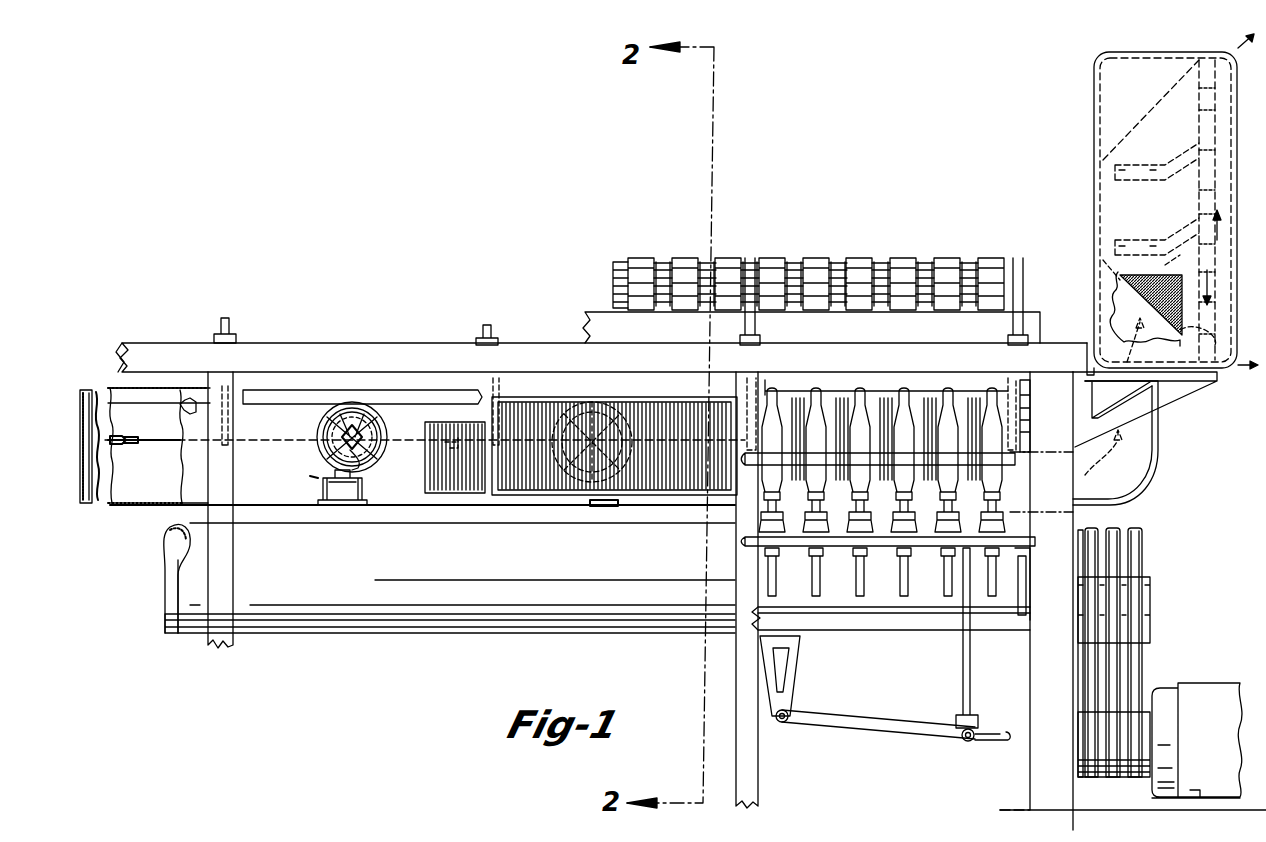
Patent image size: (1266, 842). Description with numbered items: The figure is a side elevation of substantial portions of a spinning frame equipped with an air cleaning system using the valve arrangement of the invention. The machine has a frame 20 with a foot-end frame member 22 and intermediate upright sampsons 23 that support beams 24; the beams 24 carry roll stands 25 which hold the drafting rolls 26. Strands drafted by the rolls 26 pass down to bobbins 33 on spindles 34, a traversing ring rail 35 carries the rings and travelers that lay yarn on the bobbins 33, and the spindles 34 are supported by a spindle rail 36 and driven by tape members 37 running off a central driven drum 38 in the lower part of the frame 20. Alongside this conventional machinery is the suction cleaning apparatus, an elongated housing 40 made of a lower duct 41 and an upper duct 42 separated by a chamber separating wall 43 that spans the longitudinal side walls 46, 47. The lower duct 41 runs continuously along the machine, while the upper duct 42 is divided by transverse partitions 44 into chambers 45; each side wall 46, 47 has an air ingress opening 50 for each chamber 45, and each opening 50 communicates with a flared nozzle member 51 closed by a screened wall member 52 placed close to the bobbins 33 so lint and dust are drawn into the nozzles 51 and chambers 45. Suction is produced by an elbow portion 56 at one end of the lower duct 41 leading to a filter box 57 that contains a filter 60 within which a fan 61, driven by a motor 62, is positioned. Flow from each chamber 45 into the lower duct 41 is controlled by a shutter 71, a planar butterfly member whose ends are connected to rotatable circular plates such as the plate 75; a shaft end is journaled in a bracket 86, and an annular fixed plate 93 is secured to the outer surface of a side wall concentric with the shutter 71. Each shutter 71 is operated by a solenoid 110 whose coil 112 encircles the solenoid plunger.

The frame 20 is at (1022, 766).
The foot-end frame member 22 is at (1030, 782).
The intermediate upright frame member 23 is at (233, 644).
The beam 24 is at (283, 343).
The roll stand 25 is at (224, 320).
The drafting roll 26 is at (874, 275).
The bobbin 33 is at (1004, 380).
The spindle 34 is at (1016, 506).
The traversing ring rail 35 is at (1015, 462).
The spindle rail 36 is at (876, 632).
The tape member 37 is at (800, 556).
The drum 38 is at (628, 630).
The elongated housing 40 is at (313, 376).
The lower duct 41 is at (152, 506).
The upper duct 42 is at (120, 372).
The chamber separating wall 43 is at (164, 466).
The transverse partition 44 is at (230, 428).
The chamber 45 is at (128, 392).
The side wall 46 is at (277, 481).
The side wall 47 is at (158, 445).
The air ingress opening 50 is at (182, 432).
The nozzle member 51 is at (500, 524).
The screened wall member 52 is at (420, 470).
The elbow portion 56 is at (1165, 448).
The filter box 57 is at (1094, 104).
The filter 60 is at (1120, 302).
The fan 61 is at (1222, 190).
The motor 62 is at (1134, 205).
The shutter 71 is at (122, 438).
The movable circular plate 75 is at (352, 418).
The bracket 86 is at (360, 476).
The fixed plate 93 is at (326, 458).
The solenoid 110 is at (312, 486).
The coil 112 is at (342, 487).